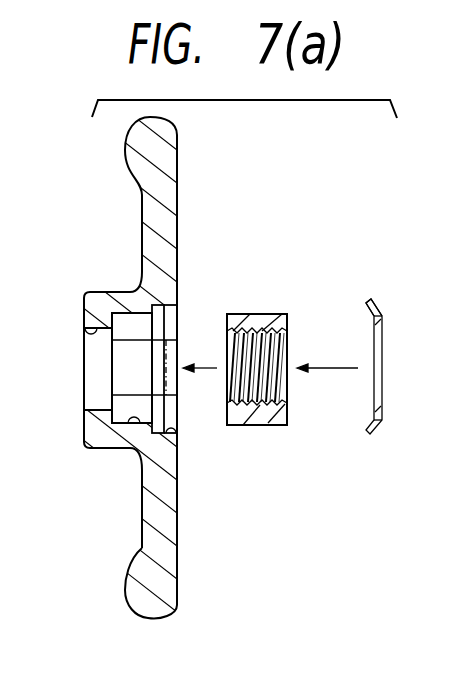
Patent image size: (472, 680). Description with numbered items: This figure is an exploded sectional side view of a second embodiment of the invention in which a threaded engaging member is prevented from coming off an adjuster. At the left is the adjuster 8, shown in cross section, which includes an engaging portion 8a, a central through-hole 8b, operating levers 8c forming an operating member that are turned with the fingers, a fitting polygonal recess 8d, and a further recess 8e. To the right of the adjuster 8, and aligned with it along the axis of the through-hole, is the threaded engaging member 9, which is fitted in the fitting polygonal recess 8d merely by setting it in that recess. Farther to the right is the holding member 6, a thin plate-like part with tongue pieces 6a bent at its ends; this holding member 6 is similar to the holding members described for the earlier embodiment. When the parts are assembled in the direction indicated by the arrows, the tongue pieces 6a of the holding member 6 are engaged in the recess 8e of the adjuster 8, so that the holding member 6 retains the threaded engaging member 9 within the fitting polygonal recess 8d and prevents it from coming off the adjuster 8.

The adjuster 8 is at (127, 140).
The engaging portion 8a is at (112, 321).
The central through-hole 8b is at (84, 332).
The operating levers 8c is at (127, 572).
The fitting polygonal recess 8d is at (132, 424).
The recess 8e is at (176, 433).
The threaded engaging member 9 is at (278, 314).
The holding member 6 is at (383, 313).
The tongue pieces 6a is at (372, 302).